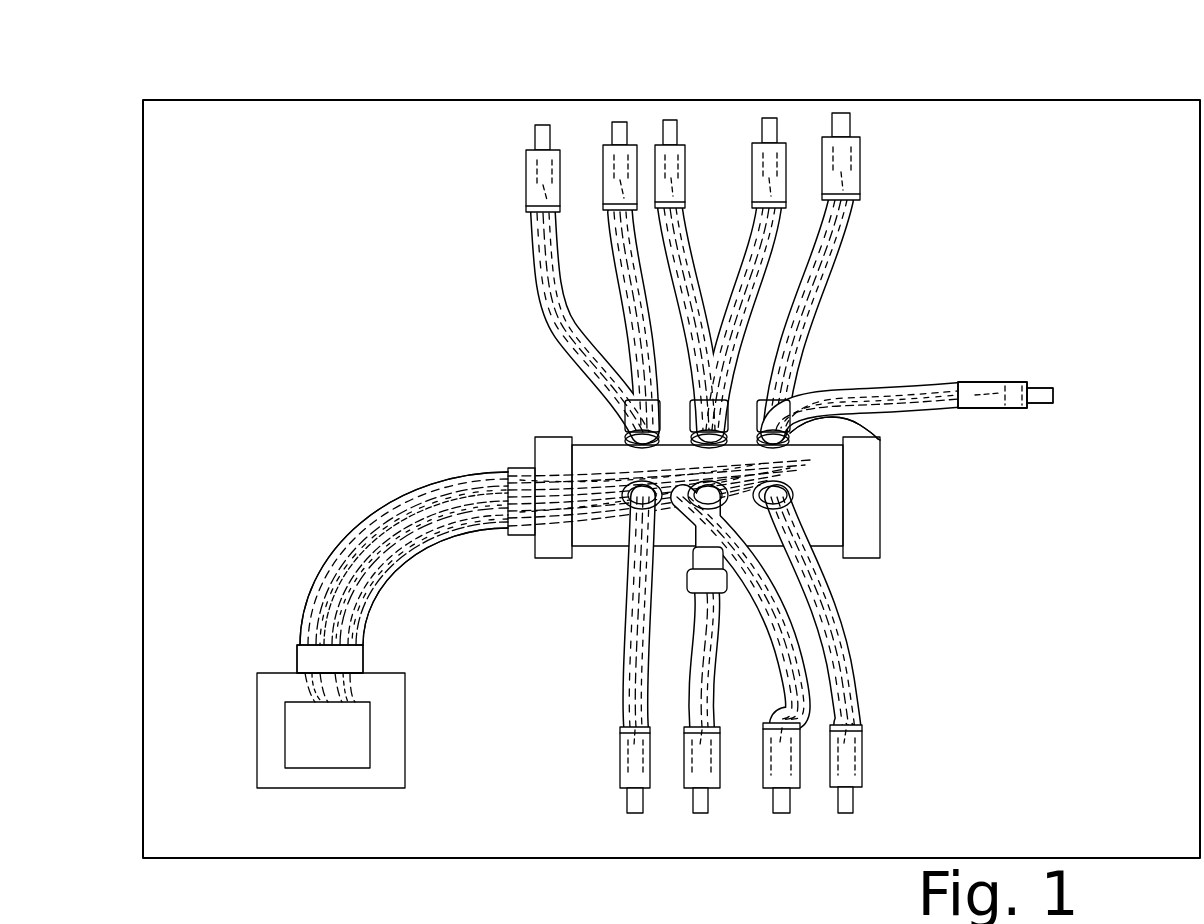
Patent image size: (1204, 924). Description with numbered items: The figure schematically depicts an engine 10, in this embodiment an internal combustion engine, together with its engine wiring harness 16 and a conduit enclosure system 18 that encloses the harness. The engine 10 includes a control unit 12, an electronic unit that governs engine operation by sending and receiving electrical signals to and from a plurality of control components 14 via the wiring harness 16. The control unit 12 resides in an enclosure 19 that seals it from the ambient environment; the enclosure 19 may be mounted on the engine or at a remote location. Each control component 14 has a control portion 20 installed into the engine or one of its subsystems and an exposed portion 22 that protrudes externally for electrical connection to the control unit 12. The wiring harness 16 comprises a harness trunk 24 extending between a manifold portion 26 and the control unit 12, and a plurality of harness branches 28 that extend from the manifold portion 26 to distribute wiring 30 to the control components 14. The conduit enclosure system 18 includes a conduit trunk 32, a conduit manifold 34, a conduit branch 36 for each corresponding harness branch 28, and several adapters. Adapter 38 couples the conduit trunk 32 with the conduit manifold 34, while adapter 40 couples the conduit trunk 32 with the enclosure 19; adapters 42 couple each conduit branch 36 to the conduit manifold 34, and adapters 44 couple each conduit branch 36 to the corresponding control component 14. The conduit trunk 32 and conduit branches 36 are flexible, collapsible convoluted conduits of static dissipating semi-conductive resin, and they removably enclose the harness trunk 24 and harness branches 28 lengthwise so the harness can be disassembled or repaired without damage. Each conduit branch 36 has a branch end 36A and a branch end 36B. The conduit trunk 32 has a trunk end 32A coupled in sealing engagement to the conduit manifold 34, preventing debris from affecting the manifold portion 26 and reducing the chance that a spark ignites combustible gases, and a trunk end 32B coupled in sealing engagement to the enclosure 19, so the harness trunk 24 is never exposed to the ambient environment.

The engine 10 is at (935, 100).
The control unit 12 is at (373, 750).
The control components 14 is at (542, 105).
The engine wiring harness 16 is at (288, 243).
The conduit enclosure system 18 is at (402, 173).
The enclosure 19 is at (407, 715).
The control portion 20 is at (1040, 387).
The exposed portion 22 is at (1020, 403).
The harness trunk 24 is at (380, 543).
The manifold portion 26 is at (997, 213).
The harness branches 28 is at (557, 317).
The wiring 30 is at (597, 463).
The conduit trunk 32 is at (440, 547).
The trunk end 32A is at (489, 466).
The trunk end 32B is at (377, 628).
The conduit manifold 34 is at (883, 437).
The conduit branch 36 is at (927, 390).
The branch end 36A is at (810, 380).
The branch end 36B is at (947, 428).
The adapter 38 is at (535, 450).
The adapter 40 is at (297, 660).
The adapters 42 is at (850, 413).
The adapters 44 is at (993, 382).